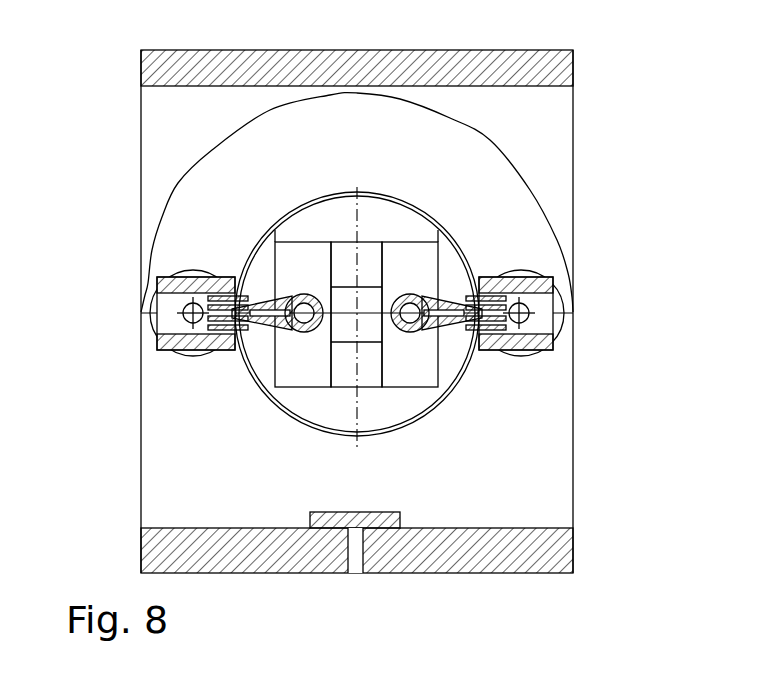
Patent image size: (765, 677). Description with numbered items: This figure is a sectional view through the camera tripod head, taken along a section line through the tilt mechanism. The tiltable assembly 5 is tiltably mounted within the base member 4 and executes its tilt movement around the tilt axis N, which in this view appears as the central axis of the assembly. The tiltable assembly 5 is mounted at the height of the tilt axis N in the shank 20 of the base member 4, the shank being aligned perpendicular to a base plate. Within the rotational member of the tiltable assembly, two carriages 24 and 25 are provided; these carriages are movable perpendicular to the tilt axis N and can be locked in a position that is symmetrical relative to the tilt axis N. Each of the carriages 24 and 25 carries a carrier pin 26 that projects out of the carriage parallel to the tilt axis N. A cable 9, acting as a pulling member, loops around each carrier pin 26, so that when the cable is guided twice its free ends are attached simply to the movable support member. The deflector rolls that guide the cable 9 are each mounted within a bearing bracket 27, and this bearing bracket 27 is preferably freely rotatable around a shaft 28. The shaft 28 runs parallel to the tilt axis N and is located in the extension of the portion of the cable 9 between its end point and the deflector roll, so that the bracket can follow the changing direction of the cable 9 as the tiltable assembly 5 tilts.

The base member 4 is at (563, 545).
The tiltable assembly 5 is at (573, 60).
The cable 9 is at (447, 303).
The shank 20 is at (512, 184).
The carriage 24 is at (400, 247).
The carriage 25 is at (303, 247).
The carrier pin 26 is at (292, 297).
The bearing bracket 27 is at (168, 323).
The shaft 28 is at (186, 308).
The tilt axis N is at (355, 314).